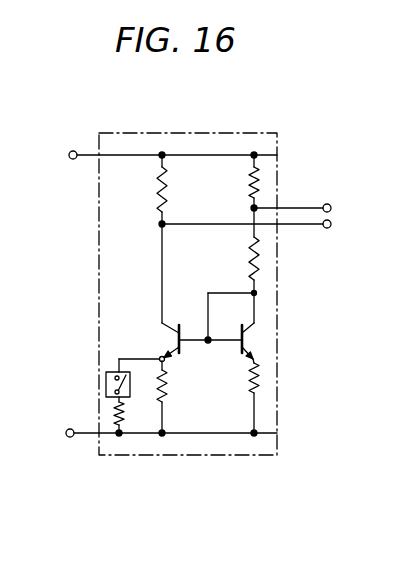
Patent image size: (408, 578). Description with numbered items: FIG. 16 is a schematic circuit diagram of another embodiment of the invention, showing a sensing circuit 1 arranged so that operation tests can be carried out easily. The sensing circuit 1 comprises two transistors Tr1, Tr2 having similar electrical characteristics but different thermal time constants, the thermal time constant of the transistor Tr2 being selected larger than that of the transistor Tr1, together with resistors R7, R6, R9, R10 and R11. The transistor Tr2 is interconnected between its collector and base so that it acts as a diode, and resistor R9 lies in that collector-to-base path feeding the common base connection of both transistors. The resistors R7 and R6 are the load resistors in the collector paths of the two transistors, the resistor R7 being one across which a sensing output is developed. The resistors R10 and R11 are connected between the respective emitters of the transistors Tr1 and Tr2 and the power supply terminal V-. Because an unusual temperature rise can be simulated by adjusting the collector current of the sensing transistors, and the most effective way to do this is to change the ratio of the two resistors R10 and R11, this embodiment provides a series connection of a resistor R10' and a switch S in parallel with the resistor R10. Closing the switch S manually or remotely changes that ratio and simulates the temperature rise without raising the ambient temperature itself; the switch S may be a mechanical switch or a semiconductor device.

The sensing circuit 1 is at (225, 455).
The resistor R7 is at (166, 182).
The resistor R6 is at (247, 181).
The resistor R9 is at (249, 263).
The resistor R10 is at (187, 397).
The resistor R11 is at (249, 379).
The resistor R10' is at (85, 413).
The transistor Tr1 is at (171, 328).
The transistor Tr2 is at (253, 331).
The switch S is at (106, 383).
The negative supply terminal V- is at (153, 434).